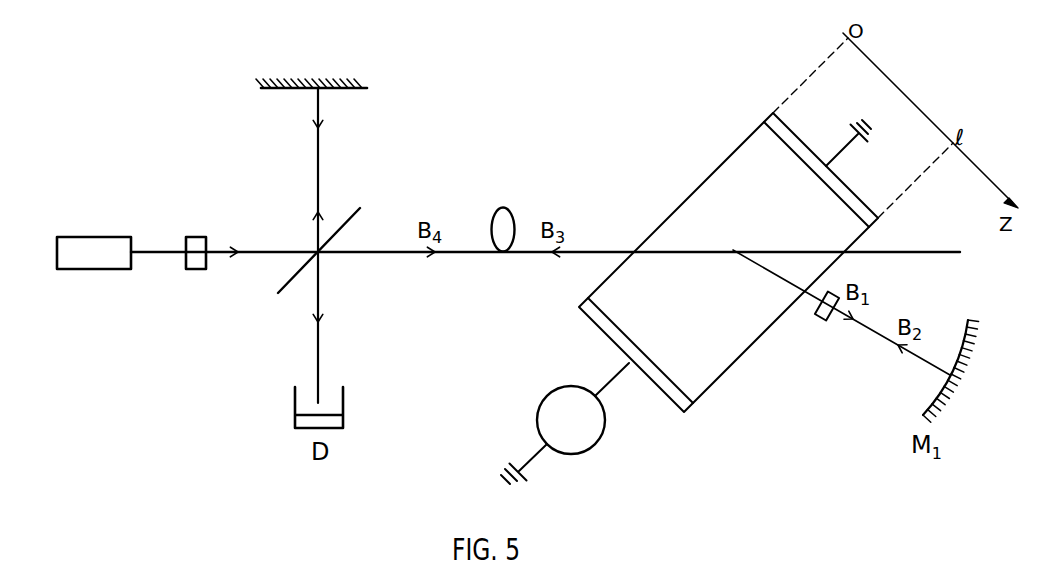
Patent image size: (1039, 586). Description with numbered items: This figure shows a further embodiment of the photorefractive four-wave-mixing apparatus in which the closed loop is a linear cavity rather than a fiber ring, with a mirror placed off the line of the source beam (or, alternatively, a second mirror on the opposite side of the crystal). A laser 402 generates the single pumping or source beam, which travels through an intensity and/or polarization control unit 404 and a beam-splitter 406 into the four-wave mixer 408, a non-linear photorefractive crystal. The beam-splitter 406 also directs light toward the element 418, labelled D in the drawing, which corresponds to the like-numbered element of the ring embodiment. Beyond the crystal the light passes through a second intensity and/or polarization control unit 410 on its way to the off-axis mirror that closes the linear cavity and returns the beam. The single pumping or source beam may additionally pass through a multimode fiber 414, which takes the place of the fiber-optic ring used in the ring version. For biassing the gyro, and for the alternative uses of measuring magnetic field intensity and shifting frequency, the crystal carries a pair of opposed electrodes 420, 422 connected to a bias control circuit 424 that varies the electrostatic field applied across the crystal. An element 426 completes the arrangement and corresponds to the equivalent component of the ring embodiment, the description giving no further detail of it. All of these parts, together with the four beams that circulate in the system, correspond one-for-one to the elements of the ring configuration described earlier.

The laser 402 is at (97, 247).
The intensity and/or polarization control unit 404 is at (197, 237).
The beam-splitter 406 is at (285, 295).
The four-wave mixer 408 is at (712, 200).
The intensity and/or polarization control unit 410 is at (820, 314).
The multimode fiber 414 is at (495, 210).
The detector 418 is at (295, 415).
The electrode 420 is at (367, 86).
The electrode 422 is at (672, 402).
The bias control circuit 424 is at (792, 127).
The element corresponding to element twenty-six of the ring embodiment 426 is at (557, 410).